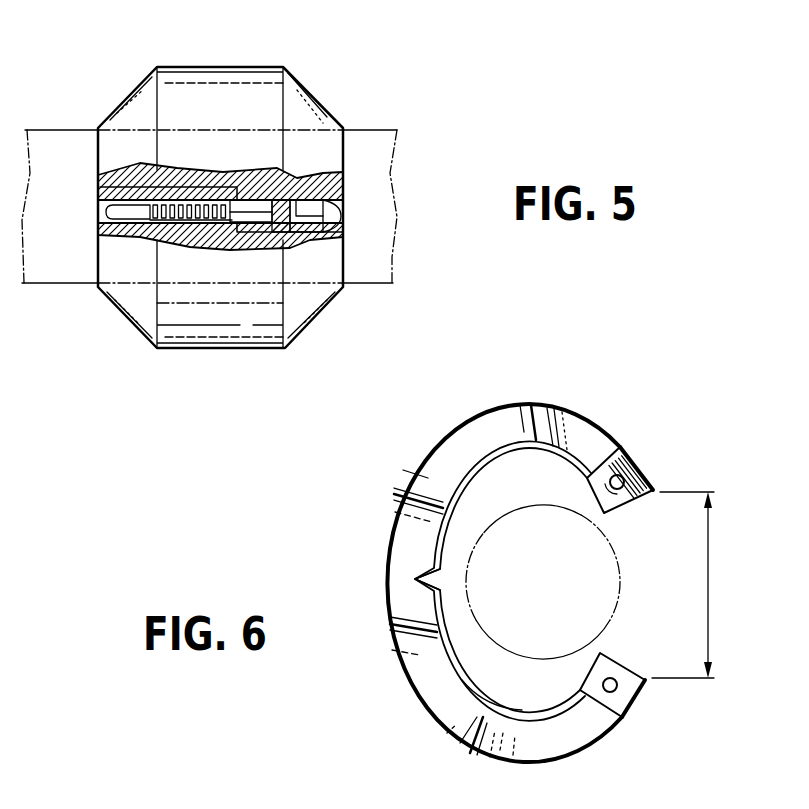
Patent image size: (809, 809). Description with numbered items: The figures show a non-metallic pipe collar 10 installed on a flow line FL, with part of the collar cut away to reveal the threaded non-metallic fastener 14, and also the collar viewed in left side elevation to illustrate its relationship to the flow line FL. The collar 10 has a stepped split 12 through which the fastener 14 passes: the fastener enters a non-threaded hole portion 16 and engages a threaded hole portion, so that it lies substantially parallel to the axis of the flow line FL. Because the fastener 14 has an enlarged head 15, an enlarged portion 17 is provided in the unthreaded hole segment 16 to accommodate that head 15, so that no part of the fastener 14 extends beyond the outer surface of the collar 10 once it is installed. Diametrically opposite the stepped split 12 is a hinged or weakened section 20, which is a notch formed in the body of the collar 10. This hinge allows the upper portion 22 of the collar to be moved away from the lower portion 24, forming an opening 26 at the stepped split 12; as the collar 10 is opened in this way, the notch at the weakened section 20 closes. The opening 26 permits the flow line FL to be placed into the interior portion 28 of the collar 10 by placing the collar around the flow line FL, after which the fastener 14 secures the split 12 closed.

In FIG. 5, the non-metallic pipe collar 10 is at (243, 204).
In FIG. 6, the non-metallic pipe collar 10 is at (532, 565).
In FIG. 5, the stepped split 12 is at (185, 182).
In FIG. 6, the stepped split 12 is at (643, 463).
In FIG. 5, the threaded non-metallic fastener 14 is at (250, 212).
In FIG. 5, the enlarged head 15 is at (305, 188).
In FIG. 5, the non-threaded hole portion 16 is at (290, 228).
In FIG. 5, the enlarged portion 17 is at (343, 210).
In FIG. 6, the hinged or weakened section 20 is at (420, 580).
In FIG. 6, the upper portion 22 is at (537, 400).
In FIG. 6, the lower portion 24 is at (563, 760).
In FIG. 6, the opening 26 is at (710, 570).
In FIG. 6, the interior portion 28 is at (423, 677).
In FIG. 5, the flow line FL is at (392, 172).
In FIG. 6, the flow line FL is at (620, 579).